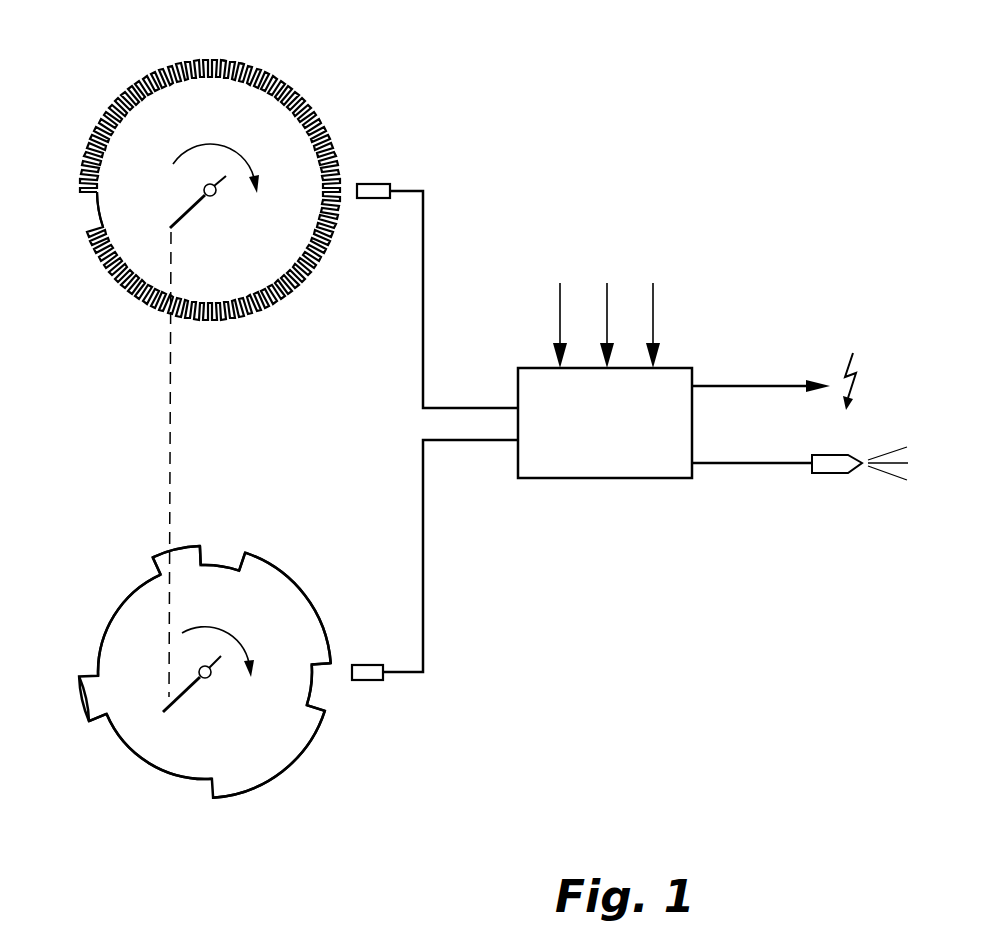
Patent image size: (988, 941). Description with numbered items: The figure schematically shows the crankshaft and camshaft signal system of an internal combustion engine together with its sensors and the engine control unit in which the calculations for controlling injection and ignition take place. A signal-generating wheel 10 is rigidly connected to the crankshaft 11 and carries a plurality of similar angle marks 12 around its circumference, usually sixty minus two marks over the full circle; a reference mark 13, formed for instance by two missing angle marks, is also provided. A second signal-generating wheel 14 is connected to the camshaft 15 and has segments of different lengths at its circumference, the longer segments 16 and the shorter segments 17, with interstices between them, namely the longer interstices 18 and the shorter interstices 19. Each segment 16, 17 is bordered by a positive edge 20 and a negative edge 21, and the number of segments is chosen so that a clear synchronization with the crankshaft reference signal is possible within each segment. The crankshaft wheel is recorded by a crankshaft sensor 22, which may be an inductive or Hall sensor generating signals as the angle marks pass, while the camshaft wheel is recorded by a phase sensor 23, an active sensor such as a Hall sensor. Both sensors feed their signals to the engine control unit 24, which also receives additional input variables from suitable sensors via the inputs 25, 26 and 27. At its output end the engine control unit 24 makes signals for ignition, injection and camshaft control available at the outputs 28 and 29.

The signal-generating wheel 10 is at (306, 79).
The crankshaft 11 is at (217, 197).
The angle marks 12 is at (253, 62).
The reference mark 13 is at (88, 206).
The second signal-generating wheel 14 is at (292, 558).
The camshaft 15 is at (213, 678).
The longer segments 16 is at (295, 591).
The shorter segments 17 is at (153, 558).
The longer interstices 18 is at (103, 610).
The shorter interstices 19 is at (237, 548).
The positive edge 20 is at (218, 556).
The negative edge 21 is at (262, 553).
The crankshaft sensor 22 is at (373, 188).
The phase sensor 23 is at (373, 674).
The engine control unit 24 is at (612, 462).
The input 25 is at (560, 300).
The input 26 is at (607, 300).
The input 27 is at (653, 300).
The output 28 is at (750, 384).
The output 29 is at (707, 466).